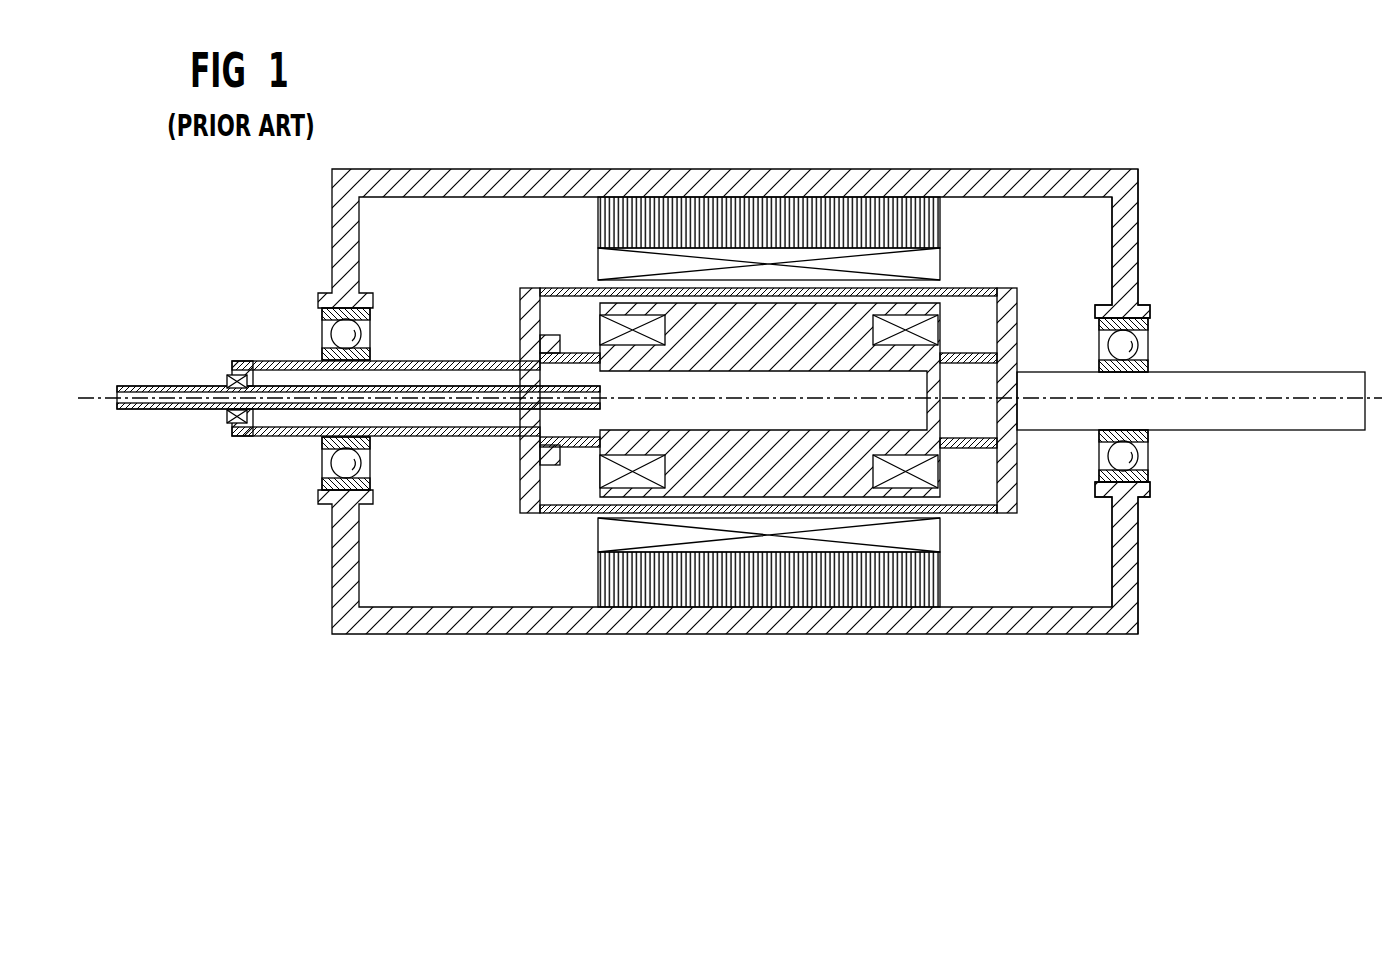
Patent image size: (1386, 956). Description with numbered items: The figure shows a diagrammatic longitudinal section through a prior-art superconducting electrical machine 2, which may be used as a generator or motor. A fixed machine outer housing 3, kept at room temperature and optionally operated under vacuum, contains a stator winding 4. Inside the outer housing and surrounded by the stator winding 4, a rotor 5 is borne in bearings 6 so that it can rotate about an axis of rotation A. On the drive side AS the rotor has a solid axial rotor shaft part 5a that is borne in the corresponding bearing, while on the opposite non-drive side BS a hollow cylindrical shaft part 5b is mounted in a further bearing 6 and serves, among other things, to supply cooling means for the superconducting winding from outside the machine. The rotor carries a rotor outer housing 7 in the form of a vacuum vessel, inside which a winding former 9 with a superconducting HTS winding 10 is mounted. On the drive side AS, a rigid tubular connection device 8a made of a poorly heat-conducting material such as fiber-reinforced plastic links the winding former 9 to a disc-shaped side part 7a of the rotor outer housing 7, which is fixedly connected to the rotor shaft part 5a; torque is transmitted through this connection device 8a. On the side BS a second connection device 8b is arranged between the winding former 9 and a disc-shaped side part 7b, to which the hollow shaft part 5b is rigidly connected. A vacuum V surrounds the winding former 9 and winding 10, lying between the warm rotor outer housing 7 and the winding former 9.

The superconducting electrical machine 2 is at (777, 685).
The machine outer housing 3 is at (1135, 246).
The stator winding 4 is at (927, 539).
The rotor 5 is at (741, 399).
The rotor shaft part 5a is at (1212, 380).
The hollow cylindrical shaft part 5b is at (407, 362).
The bearing 6 is at (314, 481).
The rotor outer housing 7 is at (771, 365).
The disc-shaped side part 7a is at (1013, 308).
The disc-shaped side part 7b is at (522, 316).
The rigid tubular connection device 8a is at (961, 444).
The second connection device 8b is at (561, 466).
The winding former 9 is at (779, 348).
The superconducting winding 10 is at (610, 326).
The axis of rotation A is at (103, 398).
The drive side AS is at (1111, 154).
The non-drive side BS is at (388, 685).
The vacuum V is at (286, 376).